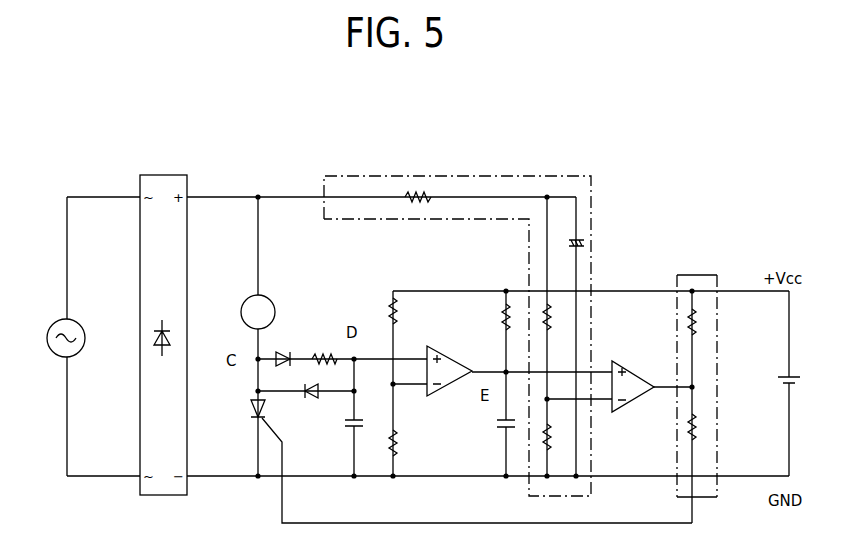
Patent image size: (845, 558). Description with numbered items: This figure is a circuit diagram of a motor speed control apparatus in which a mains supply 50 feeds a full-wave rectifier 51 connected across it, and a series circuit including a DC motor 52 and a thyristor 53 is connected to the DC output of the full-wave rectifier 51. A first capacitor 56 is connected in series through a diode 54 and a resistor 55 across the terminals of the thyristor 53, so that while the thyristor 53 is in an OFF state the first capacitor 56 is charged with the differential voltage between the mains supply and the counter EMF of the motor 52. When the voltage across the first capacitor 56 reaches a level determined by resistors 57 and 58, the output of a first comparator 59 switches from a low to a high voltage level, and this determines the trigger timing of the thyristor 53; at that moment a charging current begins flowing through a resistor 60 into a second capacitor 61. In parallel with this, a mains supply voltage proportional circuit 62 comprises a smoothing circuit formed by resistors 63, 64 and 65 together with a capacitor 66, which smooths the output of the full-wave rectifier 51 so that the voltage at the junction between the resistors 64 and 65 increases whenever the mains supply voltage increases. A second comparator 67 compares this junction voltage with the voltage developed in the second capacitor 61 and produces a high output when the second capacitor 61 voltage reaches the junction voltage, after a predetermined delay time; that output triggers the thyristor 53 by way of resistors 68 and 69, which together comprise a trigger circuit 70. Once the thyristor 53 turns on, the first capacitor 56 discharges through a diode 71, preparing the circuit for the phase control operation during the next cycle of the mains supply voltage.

The mains supply 50 is at (76, 322).
The full-wave rectifier 51 is at (177, 175).
The DC motor 52 is at (272, 300).
The thyristor 53 is at (250, 414).
The diode 54 is at (282, 355).
The resistor 55 is at (321, 350).
The first capacitor 56 is at (352, 430).
The resistor 57 is at (395, 298).
The resistor 58 is at (398, 443).
The first comparator 59 is at (439, 351).
The resistor 60 is at (505, 315).
The second capacitor 61 is at (505, 430).
The mains supply voltage proportional circuit 62 is at (562, 176).
The resistor 63 is at (416, 190).
The resistor 64 is at (553, 304).
The resistor 65 is at (555, 448).
The capacitor 66 is at (584, 238).
The second comparator 67 is at (630, 368).
The resistor 68 is at (697, 321).
The resistor 69 is at (697, 425).
The trigger circuit 70 is at (704, 498).
The diode 71 is at (319, 394).